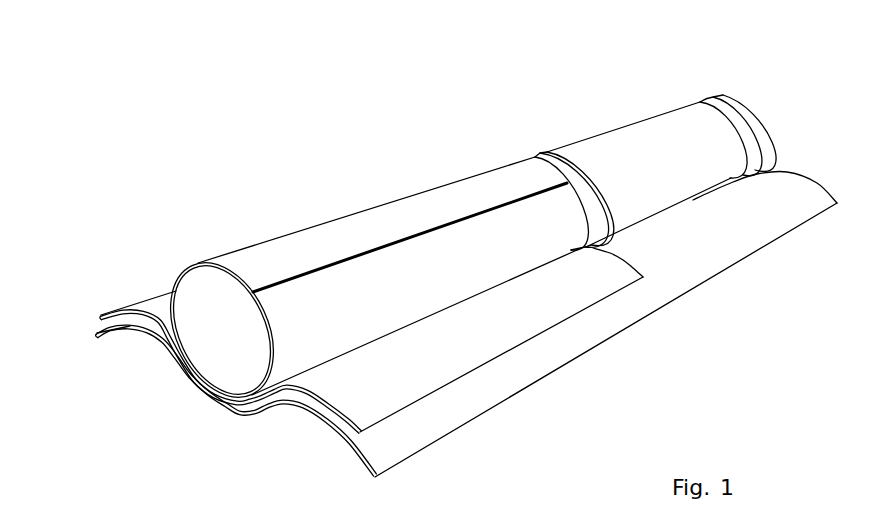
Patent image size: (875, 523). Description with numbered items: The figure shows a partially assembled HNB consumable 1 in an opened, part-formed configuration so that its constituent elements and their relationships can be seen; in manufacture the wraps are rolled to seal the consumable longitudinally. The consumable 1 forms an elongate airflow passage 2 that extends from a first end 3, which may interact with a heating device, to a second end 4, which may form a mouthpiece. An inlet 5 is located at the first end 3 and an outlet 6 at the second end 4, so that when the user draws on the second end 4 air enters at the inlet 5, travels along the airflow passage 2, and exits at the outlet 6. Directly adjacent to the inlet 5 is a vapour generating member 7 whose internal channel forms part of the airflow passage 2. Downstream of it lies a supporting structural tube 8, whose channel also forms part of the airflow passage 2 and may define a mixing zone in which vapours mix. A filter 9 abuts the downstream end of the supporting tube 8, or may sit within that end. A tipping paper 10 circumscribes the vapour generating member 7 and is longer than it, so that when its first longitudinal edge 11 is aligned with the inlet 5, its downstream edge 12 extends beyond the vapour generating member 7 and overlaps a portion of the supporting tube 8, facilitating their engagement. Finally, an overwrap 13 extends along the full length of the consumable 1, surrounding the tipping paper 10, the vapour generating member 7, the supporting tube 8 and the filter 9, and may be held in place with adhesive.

The HNB consumable 1 is at (270, 202).
The airflow passage 2 is at (200, 290).
The first end 3 is at (192, 408).
The second end 4 is at (766, 86).
The inlet 5 is at (203, 330).
The outlet 6 is at (771, 124).
The vapour generating member 7 is at (403, 225).
The supporting structural tube 8 is at (663, 150).
The filter 9 is at (742, 108).
The tipping paper 10 is at (350, 385).
The first longitudinal edge 11 is at (287, 392).
The downstream edge 12 is at (620, 257).
The overwrap 13 is at (730, 237).